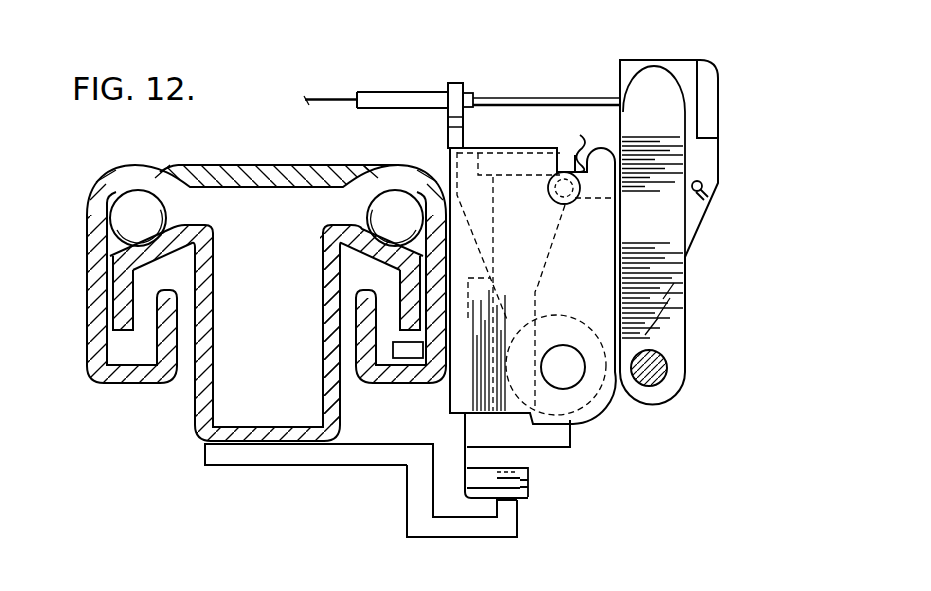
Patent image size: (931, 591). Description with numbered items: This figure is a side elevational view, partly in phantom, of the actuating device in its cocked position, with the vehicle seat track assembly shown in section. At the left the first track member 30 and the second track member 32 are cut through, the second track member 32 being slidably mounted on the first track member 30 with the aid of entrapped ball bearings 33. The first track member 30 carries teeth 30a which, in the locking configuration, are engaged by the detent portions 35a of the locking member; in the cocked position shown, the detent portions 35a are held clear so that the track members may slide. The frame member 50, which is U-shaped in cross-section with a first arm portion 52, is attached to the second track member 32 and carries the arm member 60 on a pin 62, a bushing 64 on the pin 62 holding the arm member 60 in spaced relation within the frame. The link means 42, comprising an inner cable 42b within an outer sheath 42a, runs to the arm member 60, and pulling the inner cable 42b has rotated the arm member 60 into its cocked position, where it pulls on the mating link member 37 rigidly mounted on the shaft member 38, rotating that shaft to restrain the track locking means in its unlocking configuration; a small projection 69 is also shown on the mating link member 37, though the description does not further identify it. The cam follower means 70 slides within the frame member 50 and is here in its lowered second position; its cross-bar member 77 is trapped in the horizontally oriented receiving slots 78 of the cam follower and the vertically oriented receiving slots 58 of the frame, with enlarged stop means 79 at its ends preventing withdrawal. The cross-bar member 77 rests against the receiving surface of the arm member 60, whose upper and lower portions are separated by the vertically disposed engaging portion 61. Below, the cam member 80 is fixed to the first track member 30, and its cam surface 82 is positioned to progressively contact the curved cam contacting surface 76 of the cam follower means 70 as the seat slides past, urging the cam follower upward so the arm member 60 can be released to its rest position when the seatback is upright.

The first track member 30 is at (195, 413).
The teeth 30a is at (340, 288).
The second track member 32 is at (238, 165).
The ball bearings 33 is at (127, 205).
The detent portions 35a is at (393, 348).
The mating link member 37 is at (668, 85).
The shaft member 38 is at (668, 360).
The link means 42 is at (397, 92).
The outer sheath 42a is at (472, 93).
The inner cable 42b is at (548, 97).
The frame member 50 is at (450, 158).
The first arm portion 52 is at (447, 398).
The vertically oriented receiving slots 58 is at (555, 148).
The arm member 60 is at (718, 143).
The engaging portion 61 is at (548, 196).
The pin 62 is at (575, 373).
The bushing 64 is at (577, 316).
The lug 69 is at (708, 187).
The cam follower means 70 is at (557, 437).
The curved cam contacting surface 76 is at (522, 485).
The cross-bar member 77 is at (585, 150).
The horizontally oriented receiving slots 78 is at (560, 215).
The stop means 79 is at (572, 200).
The cam member 80 is at (456, 535).
The cam surface 82 is at (512, 516).